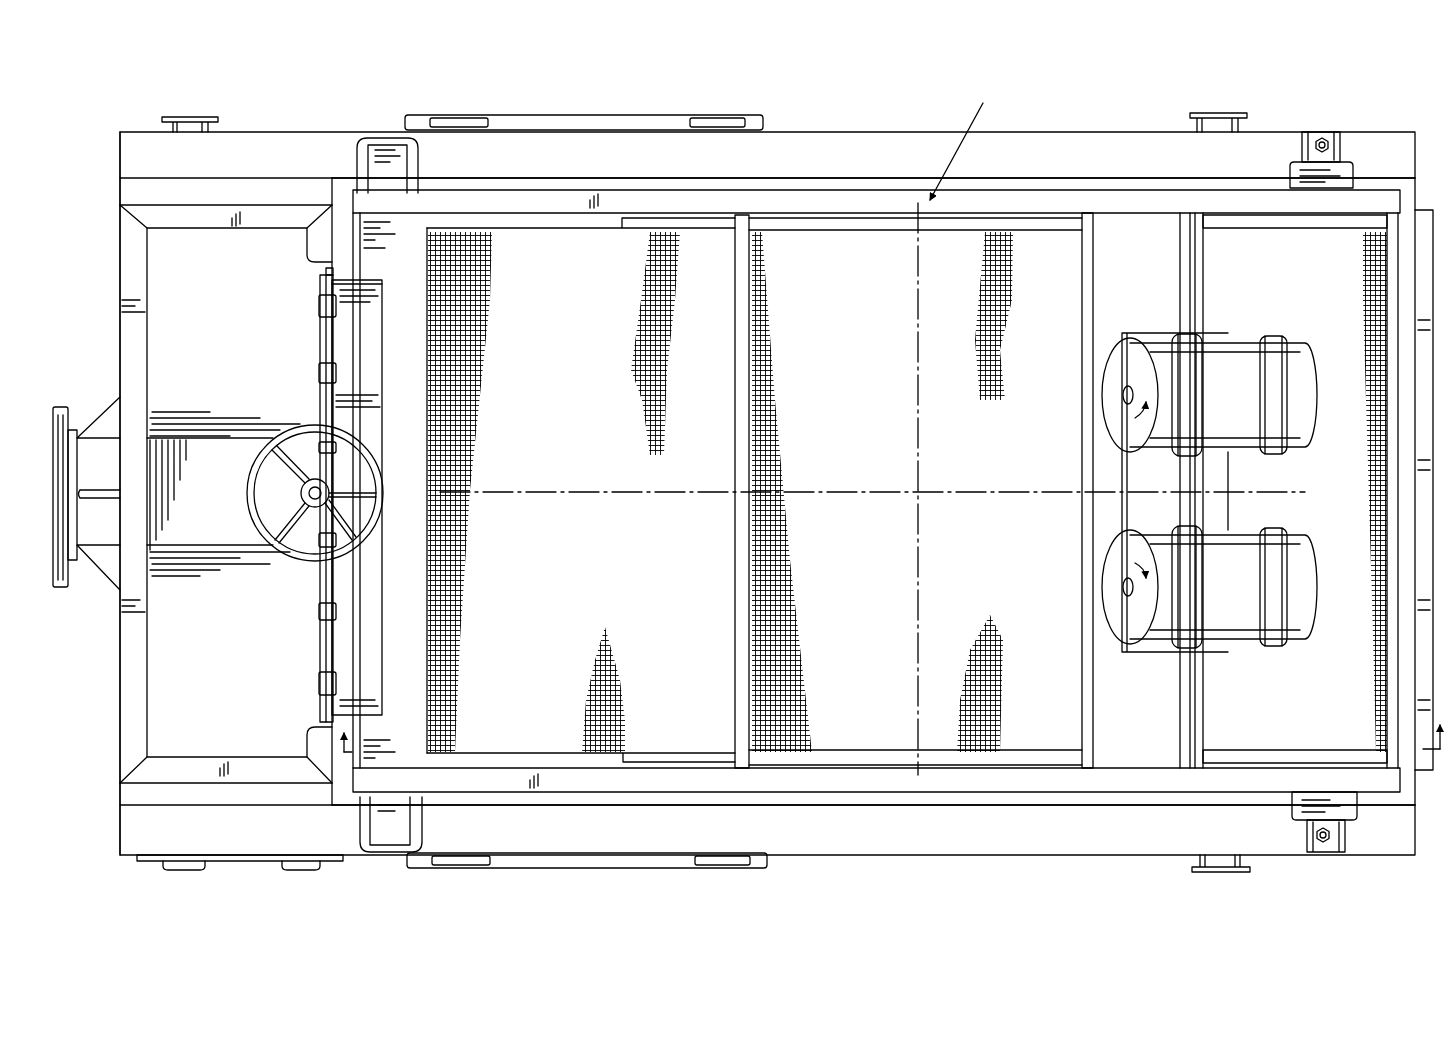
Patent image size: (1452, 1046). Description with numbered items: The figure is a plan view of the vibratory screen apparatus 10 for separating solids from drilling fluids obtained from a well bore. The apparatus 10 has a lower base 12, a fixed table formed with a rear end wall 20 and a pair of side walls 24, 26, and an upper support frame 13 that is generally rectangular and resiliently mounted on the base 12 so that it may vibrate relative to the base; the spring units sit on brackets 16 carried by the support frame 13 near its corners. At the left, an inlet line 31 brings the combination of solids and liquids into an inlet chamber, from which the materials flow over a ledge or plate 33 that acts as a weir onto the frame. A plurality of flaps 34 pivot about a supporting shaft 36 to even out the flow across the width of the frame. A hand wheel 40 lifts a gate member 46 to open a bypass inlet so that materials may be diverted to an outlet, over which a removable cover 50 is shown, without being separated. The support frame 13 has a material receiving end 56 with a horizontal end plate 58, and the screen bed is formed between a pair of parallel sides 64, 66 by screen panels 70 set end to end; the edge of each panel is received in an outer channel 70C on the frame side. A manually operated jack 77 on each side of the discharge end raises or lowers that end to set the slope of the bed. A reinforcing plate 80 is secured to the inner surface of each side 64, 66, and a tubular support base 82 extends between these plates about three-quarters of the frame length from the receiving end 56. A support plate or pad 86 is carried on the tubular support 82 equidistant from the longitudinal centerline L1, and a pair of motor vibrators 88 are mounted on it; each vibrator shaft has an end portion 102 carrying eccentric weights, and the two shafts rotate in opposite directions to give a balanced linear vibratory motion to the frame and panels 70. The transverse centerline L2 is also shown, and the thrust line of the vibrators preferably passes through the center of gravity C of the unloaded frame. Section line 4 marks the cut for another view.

The vibratory screen apparatus 10 is at (1097, 126).
The lower base 12 is at (276, 150).
The upper support frame 13 is at (968, 137).
The brackets 16 is at (387, 157).
The rear end wall 20 is at (118, 698).
The side wall 24 is at (1023, 855).
The side wall 26 is at (862, 128).
The inlet line 31 is at (65, 590).
The ledge or plate 33 is at (370, 428).
The flaps 34 is at (322, 346).
The supporting shaft 36 is at (335, 335).
The hand wheel 40 is at (303, 430).
The gate member 46 is at (218, 510).
The removable cover 50 is at (570, 123).
The material receiving end 56 is at (365, 250).
The horizontal end plate 58 is at (412, 583).
The side 64 is at (486, 205).
The side 66 is at (590, 780).
The screen panels 70 is at (657, 590).
The outer channel 70C is at (845, 230).
The manually operated jack 77 is at (1322, 135).
The reinforcing plate 80 is at (1232, 222).
The tubular support base 82 is at (1095, 292).
The support plate or pad 86 is at (1125, 462).
The motor vibrators 88 is at (1290, 358).
The end portion 102 is at (1123, 587).
The center of gravity C is at (872, 489).
The longitudinal centerline L1 is at (600, 490).
The transverse centerline L2 is at (918, 598).
The section line 4 is at (893, 722).